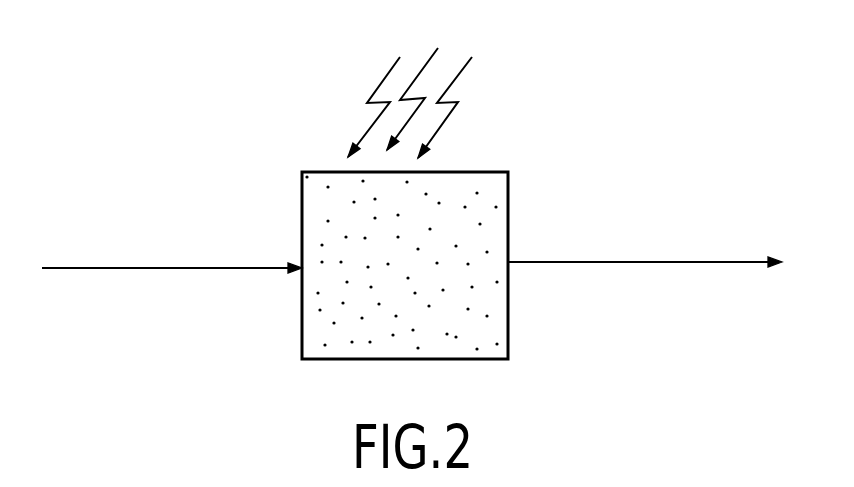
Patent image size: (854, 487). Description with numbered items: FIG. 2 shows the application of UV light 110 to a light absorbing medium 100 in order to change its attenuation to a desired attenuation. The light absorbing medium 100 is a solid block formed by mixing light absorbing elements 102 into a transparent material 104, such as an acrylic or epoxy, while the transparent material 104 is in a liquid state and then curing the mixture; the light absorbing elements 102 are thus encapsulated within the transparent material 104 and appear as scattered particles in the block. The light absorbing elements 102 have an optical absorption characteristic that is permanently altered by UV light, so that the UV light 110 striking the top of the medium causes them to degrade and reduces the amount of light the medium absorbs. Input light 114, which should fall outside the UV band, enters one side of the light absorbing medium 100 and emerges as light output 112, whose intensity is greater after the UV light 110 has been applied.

The light absorbing medium 100 is at (250, 97).
The light absorbing elements 102 is at (461, 182).
The transparent material 104 is at (490, 222).
The UV light 110 is at (456, 80).
The light output 112 is at (633, 261).
The light 114 is at (85, 268).